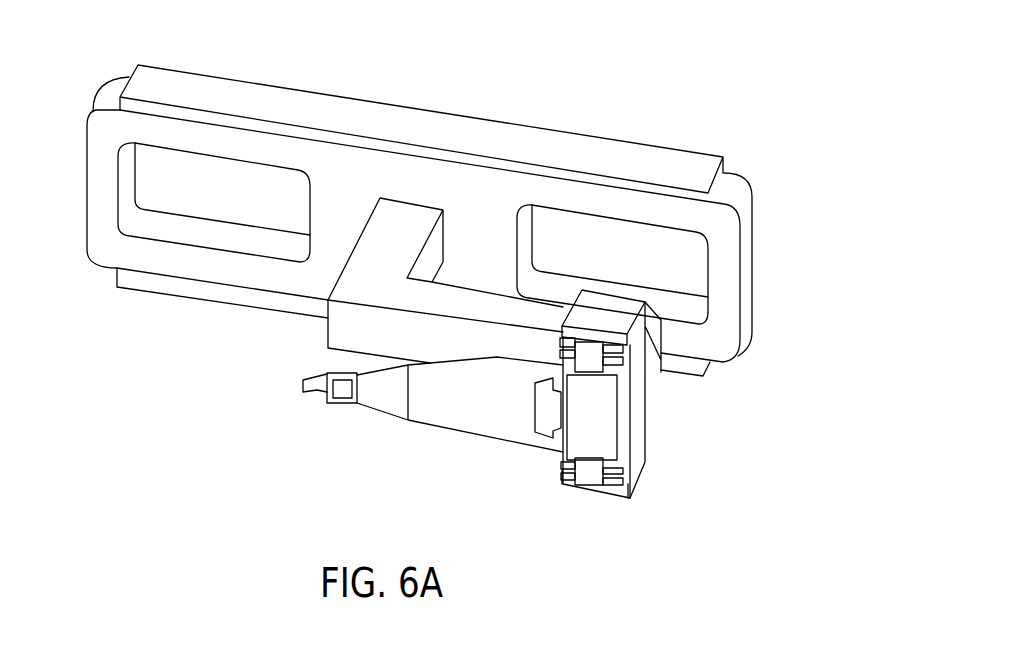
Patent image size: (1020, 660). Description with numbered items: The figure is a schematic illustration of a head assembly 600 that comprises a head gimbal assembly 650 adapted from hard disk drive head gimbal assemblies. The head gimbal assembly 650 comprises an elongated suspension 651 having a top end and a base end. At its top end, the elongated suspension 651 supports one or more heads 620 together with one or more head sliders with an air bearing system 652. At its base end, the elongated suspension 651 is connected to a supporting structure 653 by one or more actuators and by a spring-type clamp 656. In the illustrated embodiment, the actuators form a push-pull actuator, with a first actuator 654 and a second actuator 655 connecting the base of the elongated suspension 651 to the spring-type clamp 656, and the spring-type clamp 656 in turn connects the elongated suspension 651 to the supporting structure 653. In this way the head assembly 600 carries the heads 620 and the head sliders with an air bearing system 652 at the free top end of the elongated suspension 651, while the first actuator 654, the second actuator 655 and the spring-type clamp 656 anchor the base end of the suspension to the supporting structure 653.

The head assembly 600 is at (617, 105).
The head 620 is at (312, 389).
The head gimbal assembly 650 is at (468, 420).
The elongated suspension 651 is at (525, 430).
The head slider with air bearing system 652 is at (343, 397).
The supporting structure 653 is at (343, 333).
The first actuator 654 is at (592, 480).
The second actuator 655 is at (590, 347).
The spring-type clamp 656 is at (641, 363).